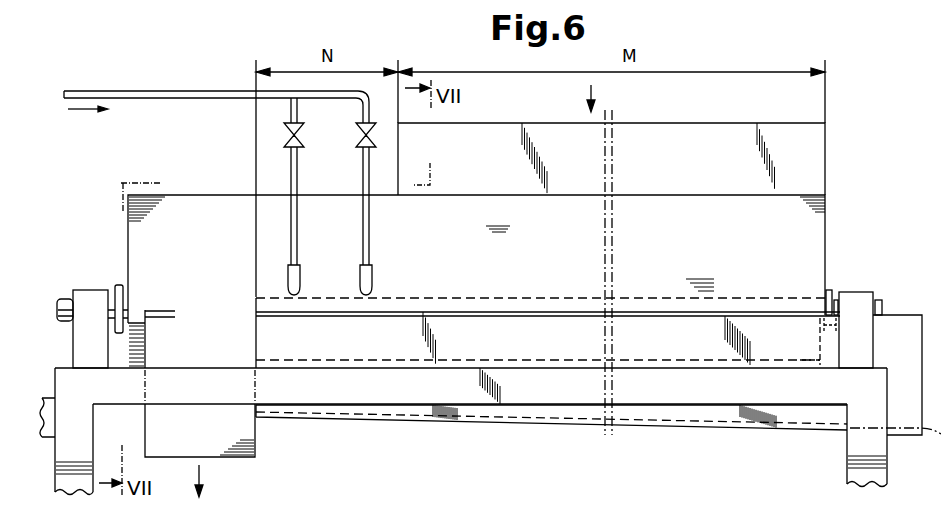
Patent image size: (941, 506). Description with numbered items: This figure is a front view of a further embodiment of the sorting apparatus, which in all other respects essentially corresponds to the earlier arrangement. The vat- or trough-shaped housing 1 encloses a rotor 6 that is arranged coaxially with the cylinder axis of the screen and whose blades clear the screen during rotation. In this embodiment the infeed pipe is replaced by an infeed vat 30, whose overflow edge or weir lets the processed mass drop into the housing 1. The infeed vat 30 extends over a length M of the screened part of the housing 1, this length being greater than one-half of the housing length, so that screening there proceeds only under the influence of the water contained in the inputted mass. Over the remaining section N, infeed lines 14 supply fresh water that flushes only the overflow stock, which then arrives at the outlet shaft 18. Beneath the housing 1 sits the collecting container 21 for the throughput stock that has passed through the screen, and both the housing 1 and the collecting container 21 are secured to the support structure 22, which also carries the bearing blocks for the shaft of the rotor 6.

The housing 1 is at (652, 272).
The rotor 6 is at (66, 303).
The infeed lines for water 14 is at (297, 235).
The outlet shaft 18 is at (210, 450).
The collecting container 21 is at (701, 420).
The support structure 22 is at (321, 392).
The infeed vat 30 is at (695, 130).